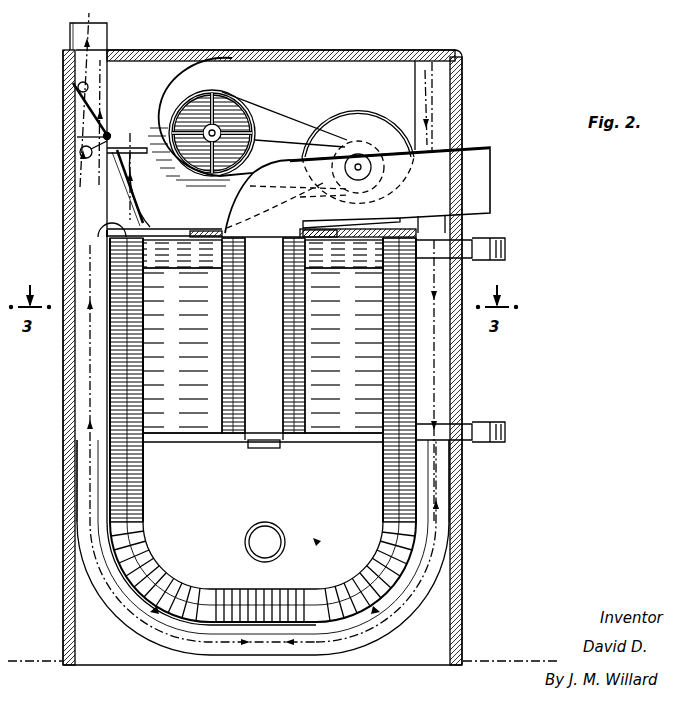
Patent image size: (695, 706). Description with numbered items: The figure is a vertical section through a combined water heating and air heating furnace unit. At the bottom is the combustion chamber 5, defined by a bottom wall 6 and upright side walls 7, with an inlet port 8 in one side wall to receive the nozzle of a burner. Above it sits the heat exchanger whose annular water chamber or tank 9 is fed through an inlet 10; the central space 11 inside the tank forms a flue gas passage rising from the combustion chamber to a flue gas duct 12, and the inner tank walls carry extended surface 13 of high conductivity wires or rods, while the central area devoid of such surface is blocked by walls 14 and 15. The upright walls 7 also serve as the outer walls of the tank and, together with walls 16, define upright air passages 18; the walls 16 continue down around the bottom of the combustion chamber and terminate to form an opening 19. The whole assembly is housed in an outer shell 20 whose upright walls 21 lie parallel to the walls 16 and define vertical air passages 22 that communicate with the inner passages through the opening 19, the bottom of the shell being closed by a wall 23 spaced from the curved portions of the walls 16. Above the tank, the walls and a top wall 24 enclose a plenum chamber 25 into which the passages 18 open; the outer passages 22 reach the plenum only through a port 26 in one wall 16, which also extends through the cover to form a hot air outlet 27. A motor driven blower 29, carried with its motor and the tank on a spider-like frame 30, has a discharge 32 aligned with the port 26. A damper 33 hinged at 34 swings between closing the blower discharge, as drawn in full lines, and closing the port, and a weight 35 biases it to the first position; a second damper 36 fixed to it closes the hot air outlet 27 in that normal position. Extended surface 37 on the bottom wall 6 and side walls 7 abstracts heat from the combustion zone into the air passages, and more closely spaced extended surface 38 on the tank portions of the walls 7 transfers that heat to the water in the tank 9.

The combustion chamber 5 is at (318, 546).
The bottom wall 6 is at (238, 589).
The upright side walls 7 is at (142, 496).
The inlet port 8 is at (247, 541).
The water chamber or tank 9 is at (182, 443).
The inlet 10 is at (507, 250).
The central space 11 is at (256, 448).
The flue gas duct 12 is at (492, 198).
The extended surface 13 is at (283, 297).
The wall 14 is at (251, 360).
The wall 15 is at (266, 238).
The outer walls of air passages 16 is at (107, 458).
The upright air passages 18 is at (140, 539).
The opening 19 is at (230, 624).
The outer shell 20 is at (55, 388).
The upright walls 21 is at (80, 509).
The vertical air passages 22 is at (74, 427).
The bottom wall 23 is at (305, 651).
The top wall 24 is at (175, 50).
The plenum chamber 25 is at (310, 82).
The port 26 is at (98, 222).
The hot air outlet 27 is at (76, 18).
The motor driven blower 29 is at (226, 70).
The spider-like frame 30 is at (196, 230).
The blower discharge 32 is at (131, 134).
The damper 33 is at (140, 211).
The hinge 34 is at (77, 137).
The weight 35 is at (80, 154).
The second damper 36 is at (74, 84).
The extended surface 37 is at (142, 513).
The extended surface 38 is at (110, 353).